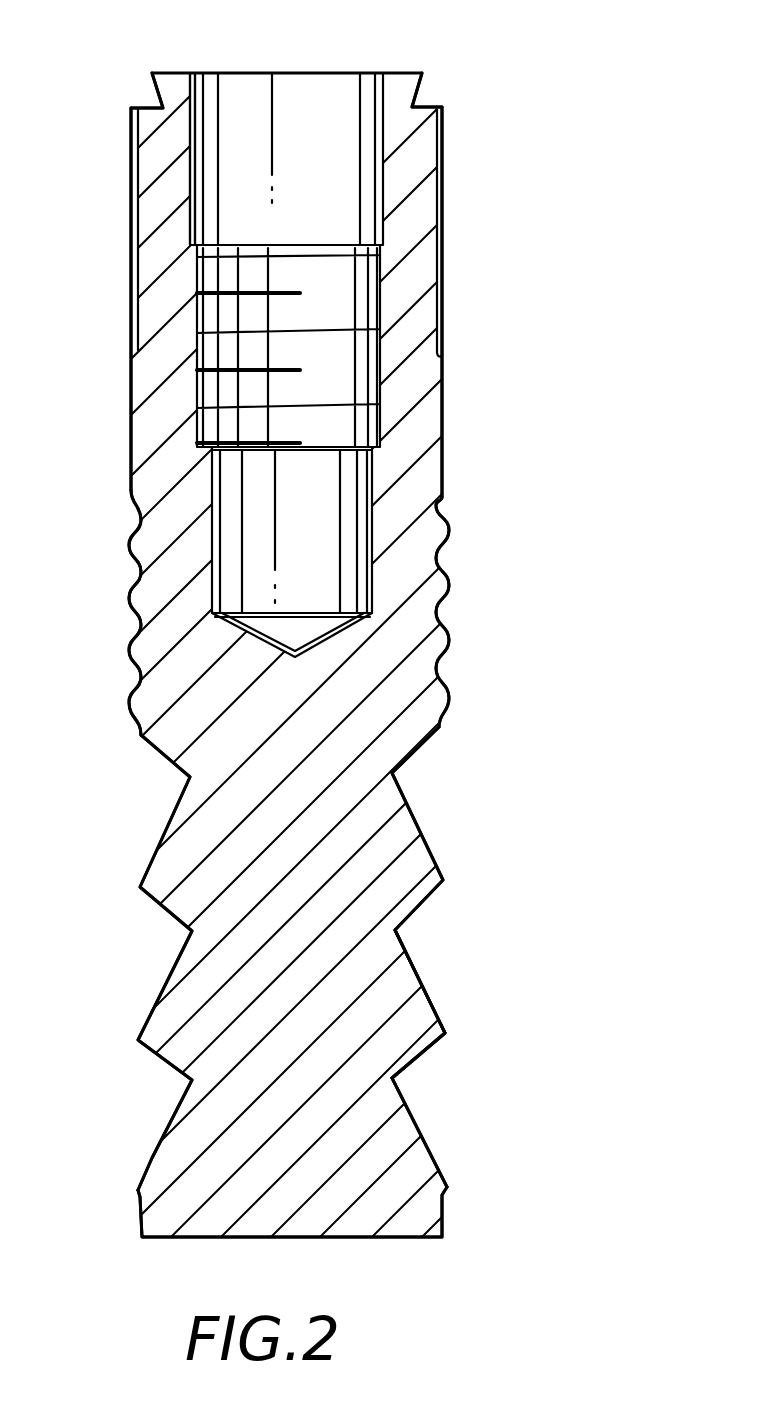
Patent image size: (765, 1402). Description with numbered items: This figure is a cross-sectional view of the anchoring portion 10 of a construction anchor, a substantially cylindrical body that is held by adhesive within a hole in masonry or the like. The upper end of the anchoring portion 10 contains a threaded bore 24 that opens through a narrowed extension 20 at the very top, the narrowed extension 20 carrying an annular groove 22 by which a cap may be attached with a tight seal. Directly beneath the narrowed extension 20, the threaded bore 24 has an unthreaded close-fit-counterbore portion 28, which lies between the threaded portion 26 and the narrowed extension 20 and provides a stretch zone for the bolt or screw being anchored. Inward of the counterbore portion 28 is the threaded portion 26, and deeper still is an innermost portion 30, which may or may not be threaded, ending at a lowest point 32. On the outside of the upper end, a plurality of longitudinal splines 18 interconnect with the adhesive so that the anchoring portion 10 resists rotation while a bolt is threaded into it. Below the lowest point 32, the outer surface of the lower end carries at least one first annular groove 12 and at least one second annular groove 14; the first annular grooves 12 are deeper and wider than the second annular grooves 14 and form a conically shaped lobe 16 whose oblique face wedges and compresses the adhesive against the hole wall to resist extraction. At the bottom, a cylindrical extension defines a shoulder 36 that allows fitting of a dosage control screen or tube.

The anchoring portion 10 is at (525, 259).
The first annular groove 12 is at (190, 932).
The second annular groove 14 is at (143, 618).
The conically shaped lobe 16 is at (417, 970).
The longitudinal spline 18 is at (443, 202).
The narrowed extension 20 is at (420, 75).
The annular groove 22 is at (145, 107).
The threaded bore 24 is at (285, 102).
The threaded portion 26 is at (358, 355).
The unthreaded close-fit-counterbore portion 28 is at (232, 148).
The innermost portion 30 is at (320, 563).
The lowest point 32 is at (305, 633).
The shoulder 36 is at (445, 1195).